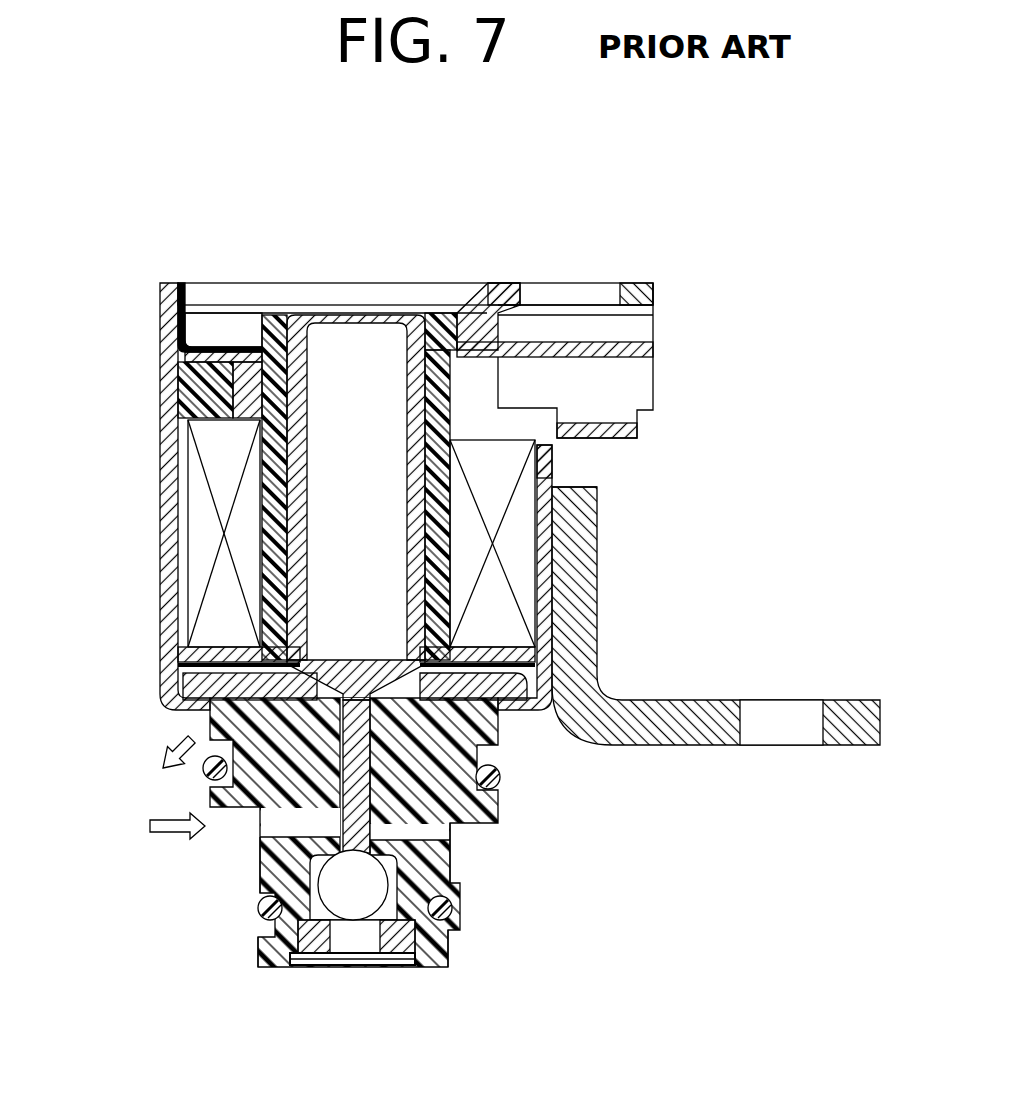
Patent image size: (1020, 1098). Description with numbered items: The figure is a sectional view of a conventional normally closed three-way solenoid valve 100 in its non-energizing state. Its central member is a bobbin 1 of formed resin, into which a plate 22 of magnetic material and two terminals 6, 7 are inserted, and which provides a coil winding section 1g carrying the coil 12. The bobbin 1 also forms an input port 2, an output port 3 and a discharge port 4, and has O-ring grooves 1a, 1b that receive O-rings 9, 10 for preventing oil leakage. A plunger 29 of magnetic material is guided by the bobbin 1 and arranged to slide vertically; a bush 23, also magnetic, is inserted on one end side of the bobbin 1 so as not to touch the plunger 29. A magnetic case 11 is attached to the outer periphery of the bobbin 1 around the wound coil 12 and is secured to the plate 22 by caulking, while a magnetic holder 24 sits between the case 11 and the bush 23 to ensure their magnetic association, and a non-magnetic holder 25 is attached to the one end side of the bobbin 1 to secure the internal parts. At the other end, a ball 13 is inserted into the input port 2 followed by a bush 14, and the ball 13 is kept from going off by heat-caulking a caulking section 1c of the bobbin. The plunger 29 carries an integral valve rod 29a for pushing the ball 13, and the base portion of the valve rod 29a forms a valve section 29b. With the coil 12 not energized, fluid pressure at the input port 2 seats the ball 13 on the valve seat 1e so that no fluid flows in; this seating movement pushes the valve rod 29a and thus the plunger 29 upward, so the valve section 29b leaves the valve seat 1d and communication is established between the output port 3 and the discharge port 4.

The solenoid valve 100 is at (206, 188).
The bobbin 1 is at (505, 760).
The O-ring groove 1a is at (445, 957).
The O-ring groove 1b is at (455, 830).
The caulking section 1c is at (300, 950).
The valve seat 1d is at (233, 768).
The valve seat 1e is at (275, 893).
The coil winding section 1g is at (520, 470).
The input port 2 is at (385, 962).
The output port 3 is at (440, 892).
The discharge port 4 is at (508, 722).
The terminal 6 is at (628, 372).
The terminal 7 is at (180, 355).
The O-ring 9 is at (452, 918).
The O-ring 10 is at (488, 790).
The case 11 is at (165, 512).
The coil 12 is at (510, 522).
The ball 13 is at (345, 900).
The bush 14 is at (260, 940).
The plate 22 is at (455, 690).
The bush 23 is at (190, 395).
The holder 24 is at (205, 330).
The non-magnetic holder 25 is at (162, 300).
The plunger 29 is at (425, 568).
The valve rod 29a is at (343, 790).
The valve section 29b is at (352, 655).